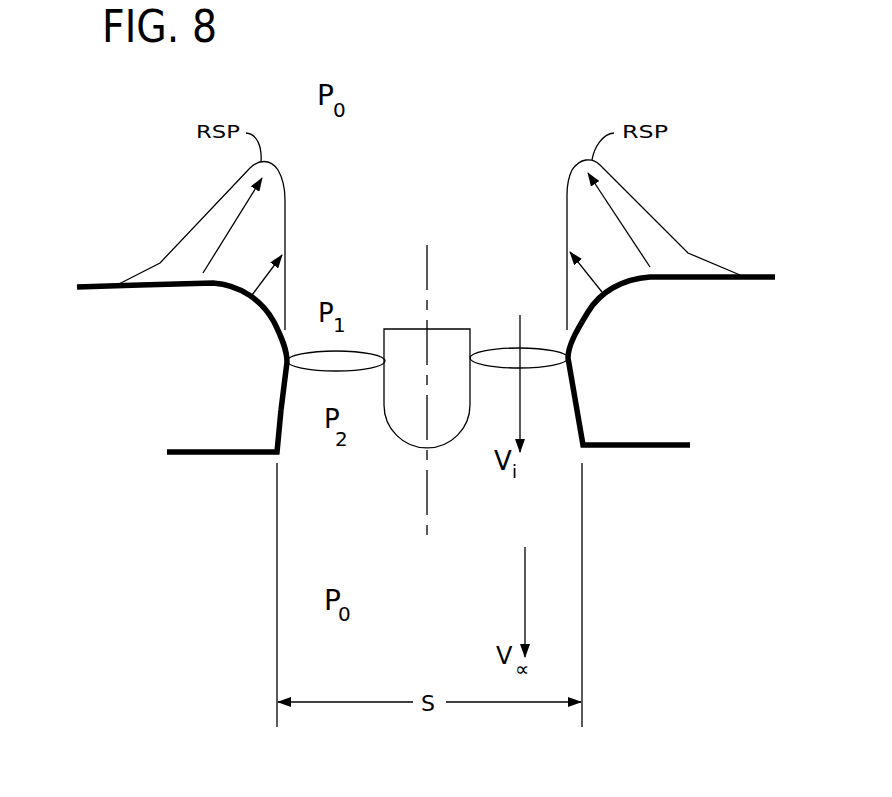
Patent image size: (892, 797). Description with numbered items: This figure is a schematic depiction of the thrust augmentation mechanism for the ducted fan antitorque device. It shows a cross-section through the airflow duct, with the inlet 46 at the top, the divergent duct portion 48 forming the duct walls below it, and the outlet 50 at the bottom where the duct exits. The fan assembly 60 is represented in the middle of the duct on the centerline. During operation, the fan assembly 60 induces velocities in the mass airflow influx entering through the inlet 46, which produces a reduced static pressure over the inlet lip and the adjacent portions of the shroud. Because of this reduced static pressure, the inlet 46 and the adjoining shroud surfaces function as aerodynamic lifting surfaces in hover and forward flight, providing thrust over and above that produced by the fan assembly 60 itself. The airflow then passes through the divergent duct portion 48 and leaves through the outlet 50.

The inlet 46 is at (286, 309).
The divergent duct portion 48 is at (597, 413).
The outlet 50 is at (282, 456).
The fan assembly 60 is at (409, 447).